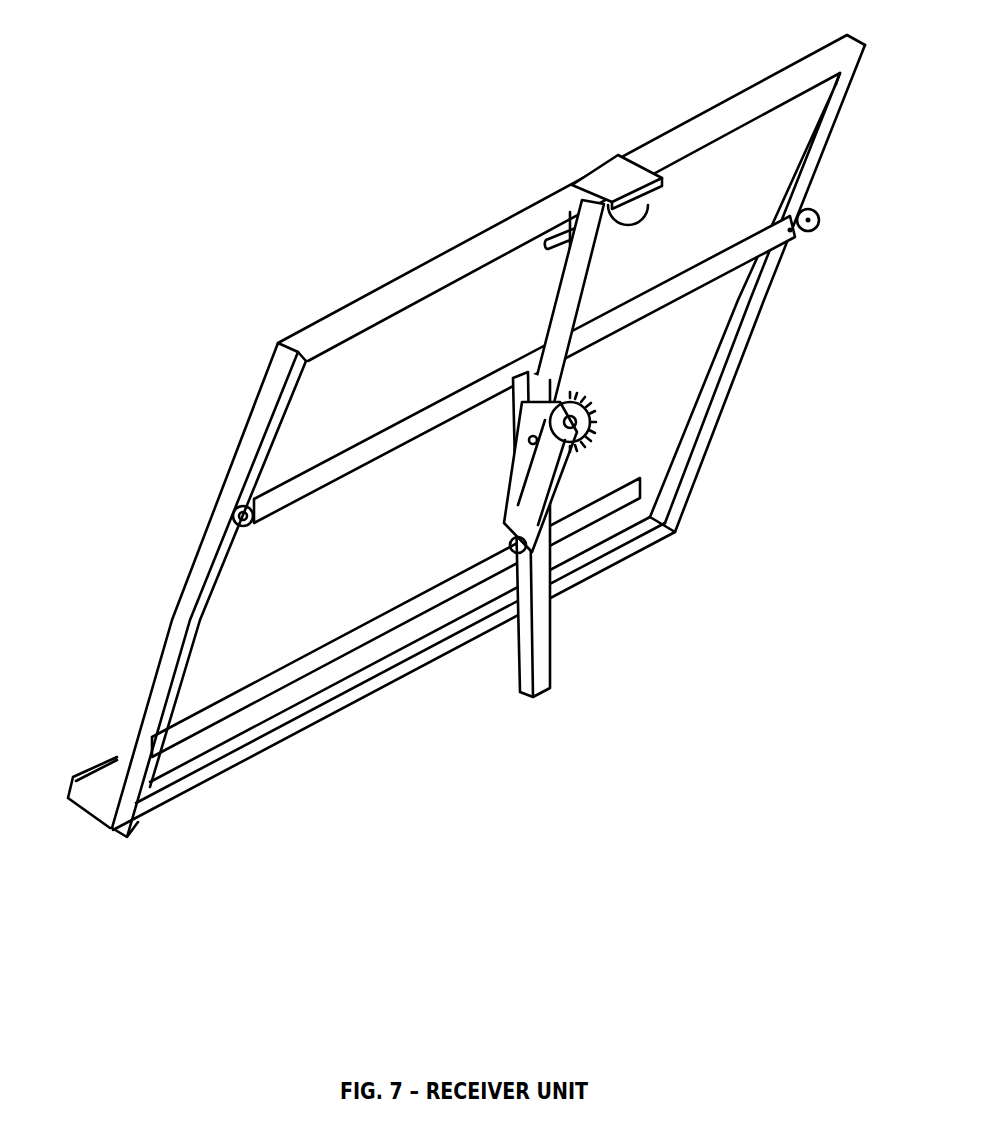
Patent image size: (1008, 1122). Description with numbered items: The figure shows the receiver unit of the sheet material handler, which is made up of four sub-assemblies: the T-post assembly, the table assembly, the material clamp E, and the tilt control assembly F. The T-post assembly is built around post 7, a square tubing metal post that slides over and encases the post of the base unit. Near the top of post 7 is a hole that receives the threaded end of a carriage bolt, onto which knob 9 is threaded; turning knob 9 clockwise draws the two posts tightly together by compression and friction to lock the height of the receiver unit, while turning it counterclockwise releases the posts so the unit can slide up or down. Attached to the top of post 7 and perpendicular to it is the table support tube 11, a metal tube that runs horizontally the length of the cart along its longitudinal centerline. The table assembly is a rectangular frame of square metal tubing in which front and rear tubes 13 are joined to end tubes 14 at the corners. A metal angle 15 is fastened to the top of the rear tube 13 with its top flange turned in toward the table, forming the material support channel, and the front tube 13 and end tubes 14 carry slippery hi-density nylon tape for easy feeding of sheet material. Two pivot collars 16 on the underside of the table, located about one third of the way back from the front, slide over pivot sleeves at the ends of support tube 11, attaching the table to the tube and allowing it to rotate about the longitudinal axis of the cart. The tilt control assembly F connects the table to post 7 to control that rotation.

The post 7 is at (540, 648).
The knob 9 is at (583, 420).
The table support tube 11 is at (415, 428).
The front and rear tubes 13 is at (420, 280).
The end tubes 14 is at (188, 595).
The metal angle 15 is at (92, 800).
The pivot collars 16 is at (263, 520).
The material clamp E is at (614, 178).
The tilt control assembly F is at (560, 313).